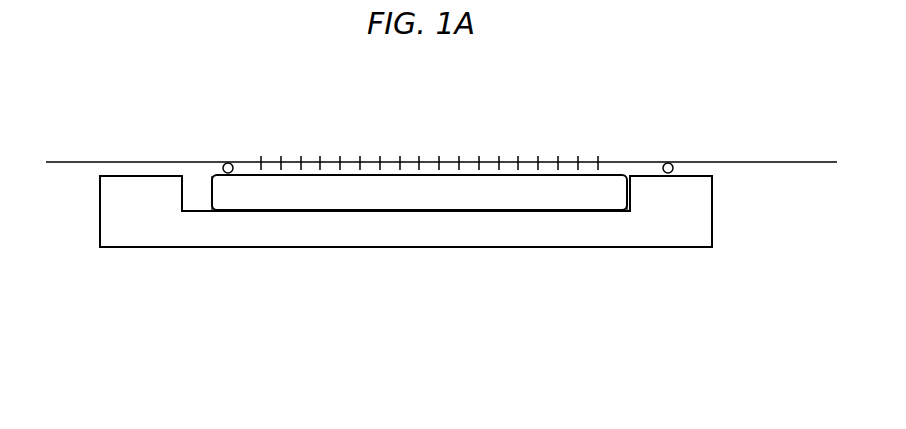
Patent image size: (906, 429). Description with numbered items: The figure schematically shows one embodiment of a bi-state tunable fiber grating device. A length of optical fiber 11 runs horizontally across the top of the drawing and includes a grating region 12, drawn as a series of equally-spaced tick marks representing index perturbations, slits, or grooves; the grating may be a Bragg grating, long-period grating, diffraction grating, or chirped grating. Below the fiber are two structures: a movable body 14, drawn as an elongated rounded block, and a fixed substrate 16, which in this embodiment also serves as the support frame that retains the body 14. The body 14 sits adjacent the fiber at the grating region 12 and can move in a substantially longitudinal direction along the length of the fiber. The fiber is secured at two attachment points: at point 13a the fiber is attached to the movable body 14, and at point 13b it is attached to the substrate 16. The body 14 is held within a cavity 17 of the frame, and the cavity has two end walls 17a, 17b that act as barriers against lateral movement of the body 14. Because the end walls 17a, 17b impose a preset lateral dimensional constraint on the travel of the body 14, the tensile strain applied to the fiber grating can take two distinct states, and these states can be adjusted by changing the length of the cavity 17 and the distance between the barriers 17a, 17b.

The optical fiber 11 is at (86, 162).
The grating region 12 is at (388, 145).
The attachment point 13a is at (229, 163).
The attachment point 13b is at (668, 163).
The movable body 14 is at (358, 215).
The fixed substrate 16 is at (683, 234).
The cavity 17 is at (203, 170).
The end wall 17a is at (184, 198).
The end wall 17b is at (631, 195).